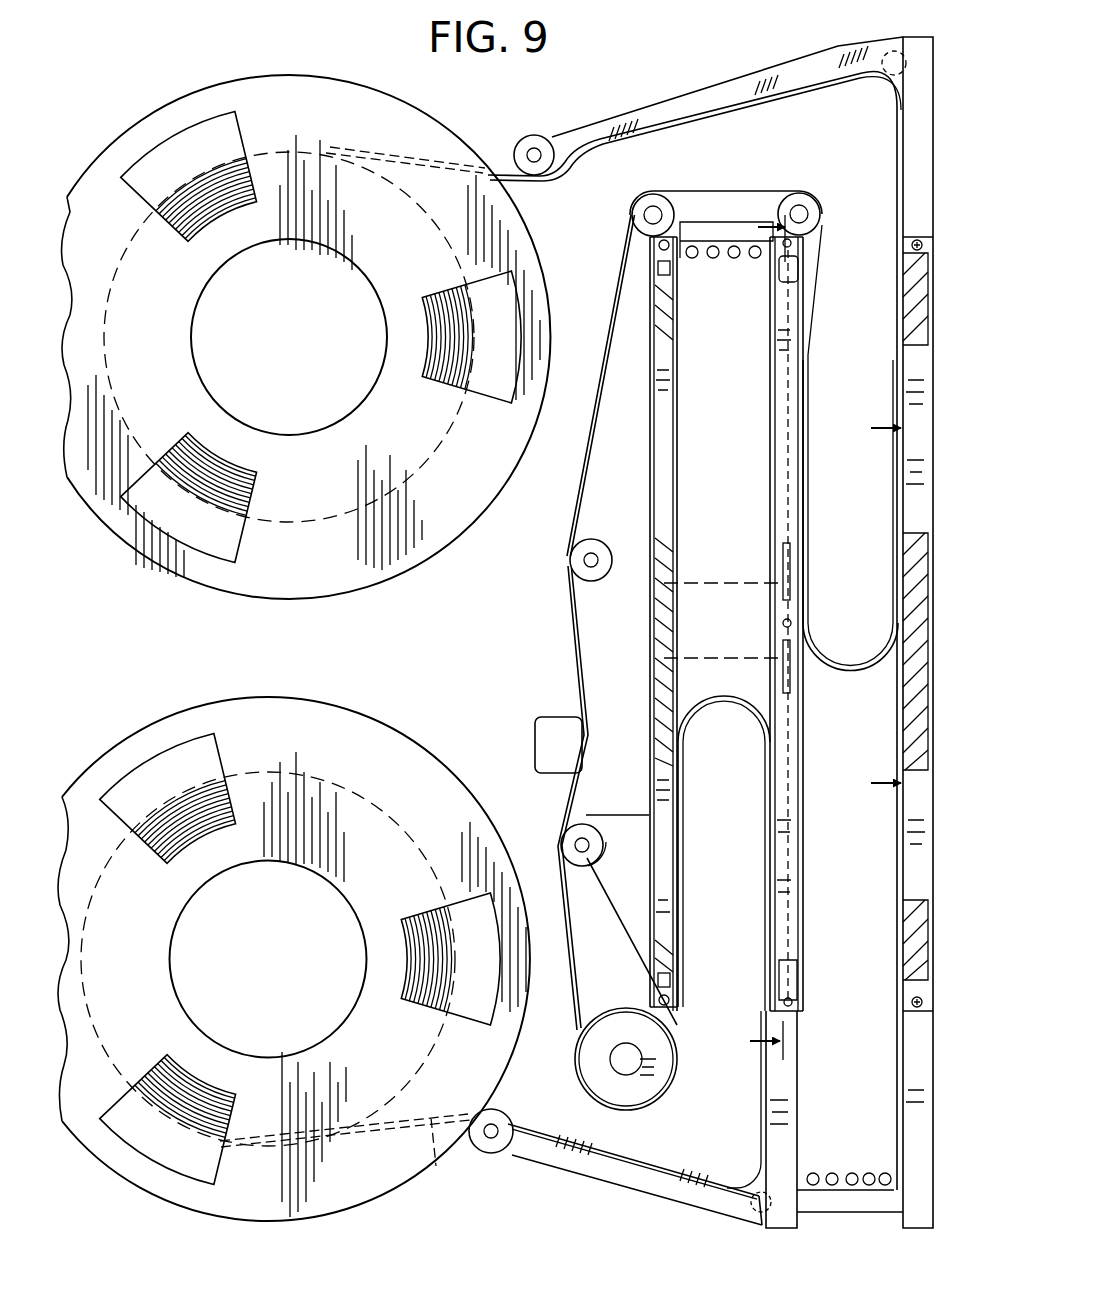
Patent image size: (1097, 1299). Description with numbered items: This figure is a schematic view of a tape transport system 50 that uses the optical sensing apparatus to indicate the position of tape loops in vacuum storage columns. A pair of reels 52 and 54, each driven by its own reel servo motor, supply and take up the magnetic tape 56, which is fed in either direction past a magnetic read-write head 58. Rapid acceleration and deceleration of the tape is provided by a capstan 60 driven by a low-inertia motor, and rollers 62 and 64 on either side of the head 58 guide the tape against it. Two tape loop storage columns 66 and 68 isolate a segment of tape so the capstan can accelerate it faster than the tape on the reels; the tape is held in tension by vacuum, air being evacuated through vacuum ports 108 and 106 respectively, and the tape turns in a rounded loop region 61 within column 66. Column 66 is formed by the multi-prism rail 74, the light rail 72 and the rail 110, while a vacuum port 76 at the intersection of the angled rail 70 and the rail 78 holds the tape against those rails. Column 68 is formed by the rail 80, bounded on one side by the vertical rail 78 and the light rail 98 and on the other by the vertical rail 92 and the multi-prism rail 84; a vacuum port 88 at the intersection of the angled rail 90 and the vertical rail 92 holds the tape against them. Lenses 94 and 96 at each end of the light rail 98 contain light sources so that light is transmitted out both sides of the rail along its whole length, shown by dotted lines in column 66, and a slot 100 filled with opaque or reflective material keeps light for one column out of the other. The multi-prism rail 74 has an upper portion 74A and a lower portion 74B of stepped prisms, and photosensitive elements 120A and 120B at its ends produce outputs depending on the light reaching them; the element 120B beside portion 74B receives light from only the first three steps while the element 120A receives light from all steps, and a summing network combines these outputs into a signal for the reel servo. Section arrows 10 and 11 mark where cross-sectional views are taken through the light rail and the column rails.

The tape transport 50 is at (146, 98).
The reel 52 is at (282, 993).
The reel 54 is at (303, 366).
The magnetic tape 56 is at (366, 1147).
The magnetic read-write head 58 is at (536, 750).
The capstan 60 is at (600, 1070).
The guide loop 61 is at (716, 700).
The roller 62 is at (842, 672).
The roller 64 is at (570, 562).
The tape loop storage column 66 is at (735, 534).
The tape loop storage column 68 is at (851, 925).
The angled rail 70 is at (606, 1170).
The light rail 72 is at (765, 611).
The multi-prism rail 74 is at (640, 630).
The upper portion of multi-prism rail 74A is at (673, 328).
The lower portion of multi-prism rail 74B is at (654, 950).
The vacuum port 76 is at (758, 1208).
The vertical rail 78 is at (790, 1078).
The rail 80 is at (830, 1205).
The multi-prism rail 84 is at (905, 848).
The vacuum port 88 is at (633, 213).
The angled rail 90 is at (705, 100).
The vertical rail 92 is at (913, 128).
The lens 94 is at (795, 988).
The lens 96 is at (800, 266).
The light rail 98 is at (785, 792).
The slot 100 is at (795, 385).
The vacuum port 106 is at (855, 1172).
The vacuum port 108 is at (713, 258).
The rail 110 is at (700, 222).
The photosensitive element 120A is at (658, 268).
The photosensitive element 120B is at (670, 980).
The section line 10 is at (746, 635).
The section line 11 is at (869, 606).